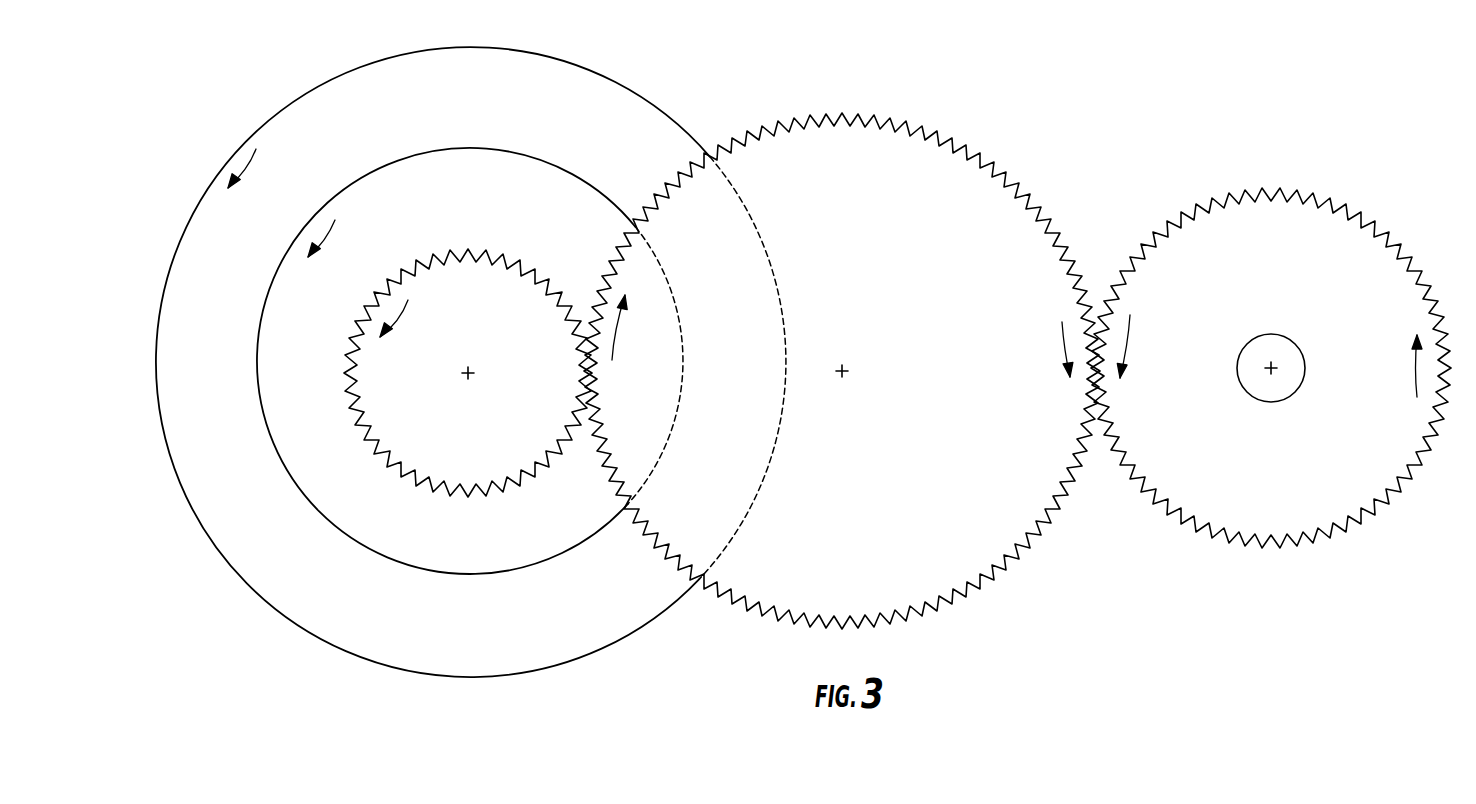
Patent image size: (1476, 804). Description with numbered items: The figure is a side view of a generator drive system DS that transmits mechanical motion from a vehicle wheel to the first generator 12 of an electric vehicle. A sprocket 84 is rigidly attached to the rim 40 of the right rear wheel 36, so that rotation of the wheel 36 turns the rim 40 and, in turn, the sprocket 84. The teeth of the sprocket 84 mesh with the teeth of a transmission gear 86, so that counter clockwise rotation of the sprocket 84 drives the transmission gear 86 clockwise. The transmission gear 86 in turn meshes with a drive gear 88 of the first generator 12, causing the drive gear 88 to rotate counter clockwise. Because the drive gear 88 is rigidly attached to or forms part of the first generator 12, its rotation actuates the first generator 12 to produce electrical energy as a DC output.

The right rear wheel 36 is at (273, 137).
The rim 40 is at (285, 312).
The sprocket 84 is at (443, 424).
The transmission gear 86 is at (889, 152).
The drive gear 88 is at (1275, 218).
The first generator 12 is at (1290, 385).
The generator drive system DS is at (1086, 140).